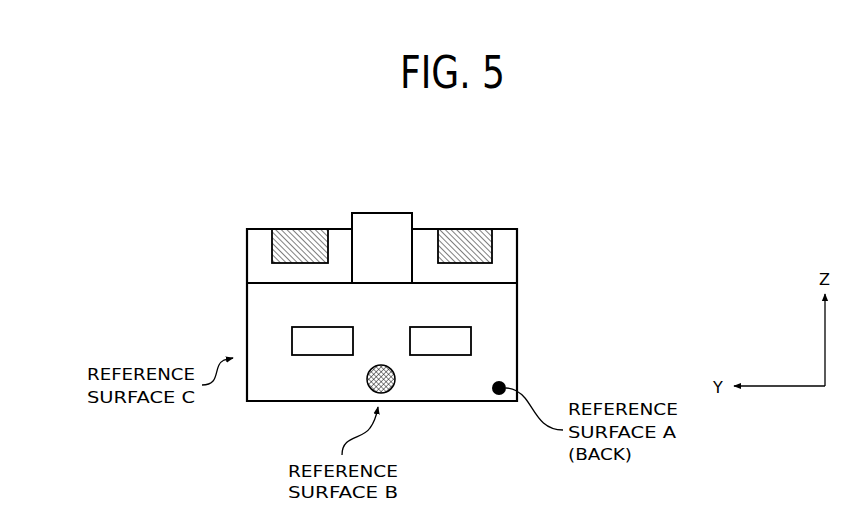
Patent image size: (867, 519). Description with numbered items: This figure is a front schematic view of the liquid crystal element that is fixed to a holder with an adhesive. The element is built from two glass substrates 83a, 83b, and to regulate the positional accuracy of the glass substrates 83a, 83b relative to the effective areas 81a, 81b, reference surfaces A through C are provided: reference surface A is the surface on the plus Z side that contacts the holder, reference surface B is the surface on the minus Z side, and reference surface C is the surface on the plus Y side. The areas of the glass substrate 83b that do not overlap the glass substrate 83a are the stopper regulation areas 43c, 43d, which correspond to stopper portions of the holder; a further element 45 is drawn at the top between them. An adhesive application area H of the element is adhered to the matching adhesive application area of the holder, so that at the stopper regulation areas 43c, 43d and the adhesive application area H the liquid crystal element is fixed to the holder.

The stopper regulation area 43c is at (300, 235).
The stopper regulation area 43d is at (465, 235).
The protrusion 45 is at (384, 212).
The effective area 81a is at (307, 326).
The effective area 81b is at (452, 326).
The glass substrate 83a is at (272, 392).
The glass substrate 83b is at (503, 239).
The adhesive application area H is at (405, 386).